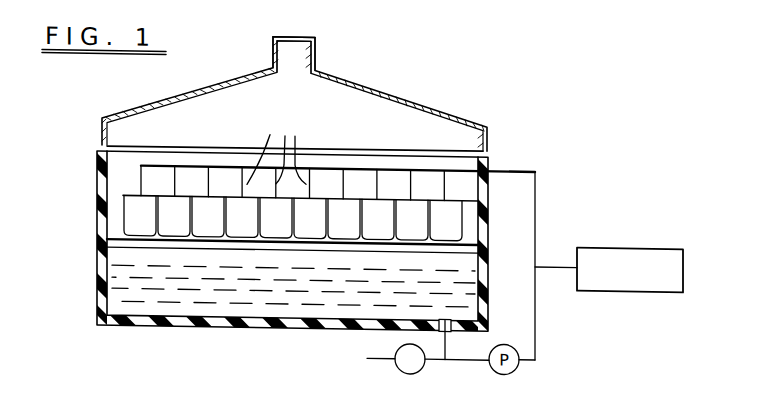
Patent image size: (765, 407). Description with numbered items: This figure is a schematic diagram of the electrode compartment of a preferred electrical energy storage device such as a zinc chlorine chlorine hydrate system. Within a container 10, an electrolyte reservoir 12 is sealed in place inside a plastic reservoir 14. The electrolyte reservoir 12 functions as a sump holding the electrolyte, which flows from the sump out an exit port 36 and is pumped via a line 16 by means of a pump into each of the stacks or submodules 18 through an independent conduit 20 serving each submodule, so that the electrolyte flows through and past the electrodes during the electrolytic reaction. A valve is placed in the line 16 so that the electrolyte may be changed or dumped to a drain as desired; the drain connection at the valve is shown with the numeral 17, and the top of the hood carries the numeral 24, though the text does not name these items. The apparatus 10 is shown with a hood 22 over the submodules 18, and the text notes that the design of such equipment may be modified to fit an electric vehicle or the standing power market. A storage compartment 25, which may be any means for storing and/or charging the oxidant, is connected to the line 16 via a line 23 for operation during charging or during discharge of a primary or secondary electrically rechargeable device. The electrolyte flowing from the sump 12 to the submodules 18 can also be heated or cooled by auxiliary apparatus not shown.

The container 10 is at (97, 213).
The electrolyte reservoir 12 is at (203, 305).
The plastic reservoir 14 is at (97, 300).
The line 16 is at (455, 331).
The drain valve line 17 is at (380, 354).
The submodules 18 is at (147, 226).
The independent conduit 20 is at (276, 147).
The hood 22 is at (447, 109).
The line 23 is at (553, 260).
The vent stack 24 is at (296, 34).
The storage compartment 25 is at (630, 270).
The exit port 36 is at (449, 314).